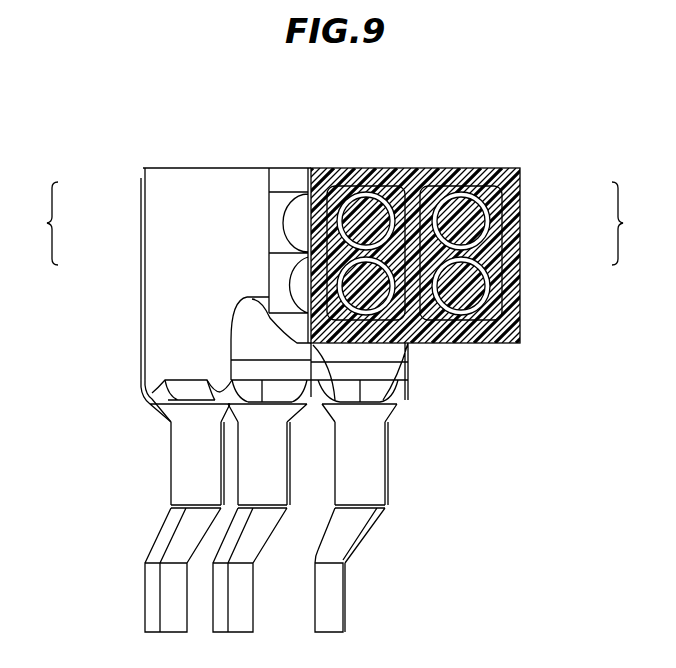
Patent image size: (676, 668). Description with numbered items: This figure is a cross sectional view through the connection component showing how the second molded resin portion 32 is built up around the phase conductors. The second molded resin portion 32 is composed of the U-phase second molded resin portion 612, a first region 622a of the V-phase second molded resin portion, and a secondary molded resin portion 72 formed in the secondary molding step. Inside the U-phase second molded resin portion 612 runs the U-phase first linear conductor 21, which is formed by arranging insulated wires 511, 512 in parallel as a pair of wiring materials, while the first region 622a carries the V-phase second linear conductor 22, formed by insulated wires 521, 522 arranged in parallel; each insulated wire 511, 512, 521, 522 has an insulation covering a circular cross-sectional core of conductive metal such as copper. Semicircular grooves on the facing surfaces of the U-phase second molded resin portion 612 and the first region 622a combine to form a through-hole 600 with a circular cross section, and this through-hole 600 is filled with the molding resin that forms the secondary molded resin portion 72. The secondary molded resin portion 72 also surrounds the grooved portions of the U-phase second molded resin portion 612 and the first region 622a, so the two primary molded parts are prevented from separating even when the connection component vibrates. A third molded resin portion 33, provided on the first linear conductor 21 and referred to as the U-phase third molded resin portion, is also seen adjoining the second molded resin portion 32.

The third molded resin portion 33 is at (188, 168).
The insulated wire 521 is at (362, 222).
The insulated wire 522 is at (362, 287).
The insulated wire 511 is at (466, 223).
The insulated wire 512 is at (466, 287).
The second linear conductor 22 is at (36, 223).
The first linear conductor 21 is at (633, 223).
The through-hole 600 is at (417, 181).
The first region of the V-phase second molded resin portion 622a is at (345, 188).
The U-phase second molded resin portion 612 is at (497, 188).
The secondary molded resin portion 72 is at (452, 177).
The second molded resin portion 32 is at (462, 347).